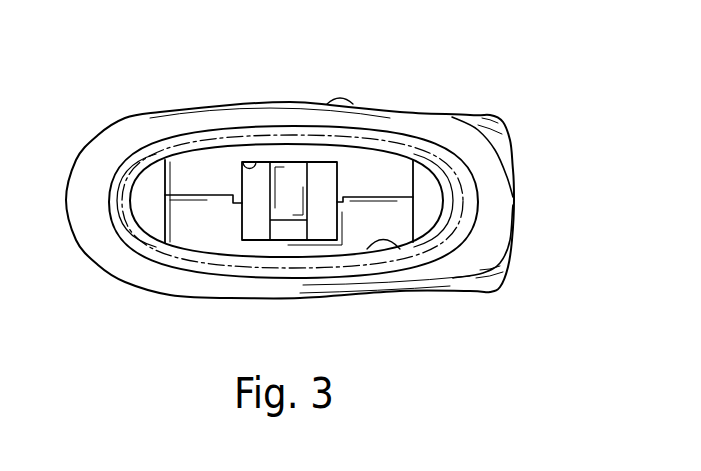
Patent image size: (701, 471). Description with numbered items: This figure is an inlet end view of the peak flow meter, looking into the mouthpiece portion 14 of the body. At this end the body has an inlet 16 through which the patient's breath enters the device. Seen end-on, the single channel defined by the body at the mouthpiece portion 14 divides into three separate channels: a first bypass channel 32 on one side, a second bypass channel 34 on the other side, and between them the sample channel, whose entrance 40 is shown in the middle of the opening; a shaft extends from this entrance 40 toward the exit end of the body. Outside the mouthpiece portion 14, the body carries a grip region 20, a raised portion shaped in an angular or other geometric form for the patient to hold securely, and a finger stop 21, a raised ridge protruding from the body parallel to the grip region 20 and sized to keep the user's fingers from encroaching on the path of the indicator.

The mouthpiece portion 14 is at (493, 200).
The inlet 16 is at (400, 248).
The grip region 20 is at (508, 137).
The finger stop 21 is at (338, 98).
The first bypass channel 32 is at (150, 197).
The second bypass channel 34 is at (432, 200).
The entrance to the sample channel 40 is at (237, 163).